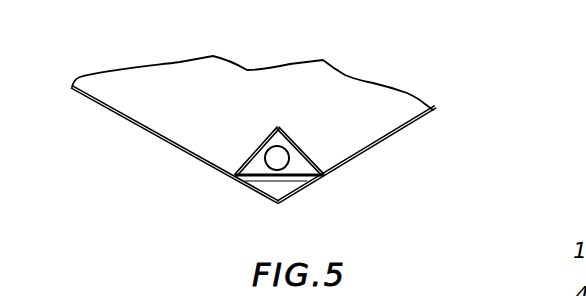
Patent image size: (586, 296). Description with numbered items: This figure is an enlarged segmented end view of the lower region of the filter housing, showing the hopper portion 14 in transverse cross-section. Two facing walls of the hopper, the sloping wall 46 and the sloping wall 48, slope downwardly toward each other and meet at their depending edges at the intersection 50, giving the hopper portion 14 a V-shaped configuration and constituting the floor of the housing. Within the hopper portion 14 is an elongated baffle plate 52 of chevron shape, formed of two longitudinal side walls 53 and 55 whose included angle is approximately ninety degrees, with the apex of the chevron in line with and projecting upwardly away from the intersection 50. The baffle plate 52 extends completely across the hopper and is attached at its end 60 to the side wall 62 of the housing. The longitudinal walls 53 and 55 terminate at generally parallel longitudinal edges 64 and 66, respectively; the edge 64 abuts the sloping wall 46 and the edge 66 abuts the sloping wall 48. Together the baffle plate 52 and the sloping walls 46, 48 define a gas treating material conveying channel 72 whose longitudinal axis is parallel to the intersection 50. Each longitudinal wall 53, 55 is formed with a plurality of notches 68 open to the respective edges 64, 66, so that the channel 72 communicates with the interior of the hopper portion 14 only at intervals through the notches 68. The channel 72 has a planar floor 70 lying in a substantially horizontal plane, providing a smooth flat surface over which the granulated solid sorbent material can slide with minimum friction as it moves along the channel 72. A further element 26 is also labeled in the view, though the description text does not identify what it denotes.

The hopper portion 14 is at (116, 182).
The aperture 26 is at (275, 156).
The sloping wall 46 is at (420, 104).
The sloping wall 48 is at (160, 134).
The intersection of the sloping walls 50 is at (278, 199).
The baffle plate 52 is at (285, 118).
The longitudinal side wall 53 is at (315, 144).
The longitudinal side wall 55 is at (263, 152).
The end of the baffle plate 60 is at (297, 148).
The side wall of the housing 62 is at (343, 82).
The longitudinal edge 64 is at (314, 176).
The longitudinal edge 66 is at (241, 170).
The notches 68 is at (245, 172).
The planar floor 70 is at (289, 181).
The gas treating material conveying channel 72 is at (256, 156).